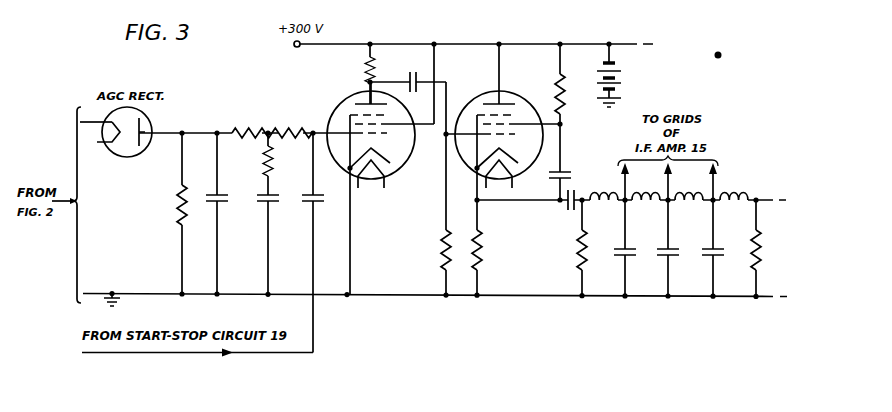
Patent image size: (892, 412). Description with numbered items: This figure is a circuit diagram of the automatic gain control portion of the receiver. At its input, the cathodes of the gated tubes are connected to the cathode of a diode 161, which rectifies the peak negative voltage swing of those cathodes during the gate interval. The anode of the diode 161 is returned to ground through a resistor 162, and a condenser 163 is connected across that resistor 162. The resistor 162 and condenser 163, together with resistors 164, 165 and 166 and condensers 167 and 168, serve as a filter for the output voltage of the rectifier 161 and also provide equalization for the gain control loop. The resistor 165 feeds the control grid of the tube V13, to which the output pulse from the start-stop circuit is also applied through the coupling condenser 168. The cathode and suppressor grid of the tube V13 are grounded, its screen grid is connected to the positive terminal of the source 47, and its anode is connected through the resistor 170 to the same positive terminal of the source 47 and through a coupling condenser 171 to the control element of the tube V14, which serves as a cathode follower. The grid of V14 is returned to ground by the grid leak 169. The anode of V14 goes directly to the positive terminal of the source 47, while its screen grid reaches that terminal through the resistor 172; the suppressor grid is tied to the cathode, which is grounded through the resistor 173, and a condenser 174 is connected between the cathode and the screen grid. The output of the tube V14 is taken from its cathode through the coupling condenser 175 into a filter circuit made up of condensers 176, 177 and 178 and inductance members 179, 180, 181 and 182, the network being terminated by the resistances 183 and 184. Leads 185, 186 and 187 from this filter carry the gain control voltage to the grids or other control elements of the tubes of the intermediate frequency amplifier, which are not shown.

The diode 161 is at (131, 150).
The resistor 162 is at (178, 209).
The condenser 163 is at (220, 206).
The resistor 164 is at (261, 124).
The resistor 165 is at (284, 111).
The resistor 166 is at (273, 162).
The condenser 167 is at (270, 206).
The coupling condenser 168 is at (315, 206).
The grid leak 169 is at (440, 258).
The resistor 170 is at (367, 77).
The coupling condenser 171 is at (410, 79).
The resistor 172 is at (566, 99).
The resistor 173 is at (476, 258).
The condenser 174 is at (570, 162).
The coupling condenser 175 is at (578, 194).
The condenser 176 is at (628, 258).
The condenser 177 is at (671, 258).
The condenser 178 is at (716, 258).
The inductance member 179 is at (594, 213).
The inductance member 180 is at (639, 213).
The inductance member 181 is at (684, 213).
The inductance member 182 is at (724, 213).
The resistance 183 is at (577, 258).
The resistance 184 is at (762, 258).
The lead 185 is at (627, 192).
The lead 186 is at (670, 192).
The lead 187 is at (715, 192).
The source 47 is at (621, 79).
The tube V13 is at (392, 165).
The tube V14 is at (520, 165).